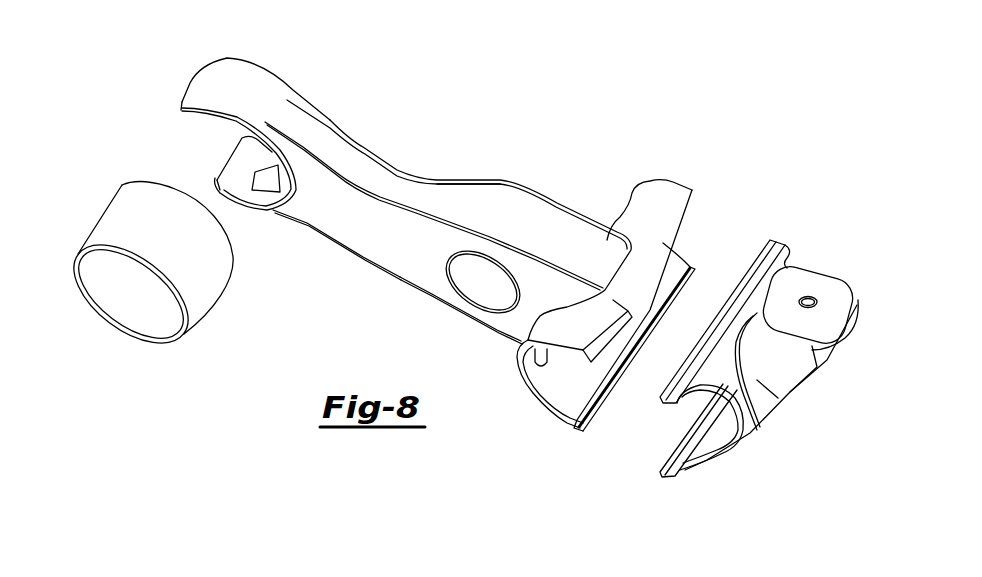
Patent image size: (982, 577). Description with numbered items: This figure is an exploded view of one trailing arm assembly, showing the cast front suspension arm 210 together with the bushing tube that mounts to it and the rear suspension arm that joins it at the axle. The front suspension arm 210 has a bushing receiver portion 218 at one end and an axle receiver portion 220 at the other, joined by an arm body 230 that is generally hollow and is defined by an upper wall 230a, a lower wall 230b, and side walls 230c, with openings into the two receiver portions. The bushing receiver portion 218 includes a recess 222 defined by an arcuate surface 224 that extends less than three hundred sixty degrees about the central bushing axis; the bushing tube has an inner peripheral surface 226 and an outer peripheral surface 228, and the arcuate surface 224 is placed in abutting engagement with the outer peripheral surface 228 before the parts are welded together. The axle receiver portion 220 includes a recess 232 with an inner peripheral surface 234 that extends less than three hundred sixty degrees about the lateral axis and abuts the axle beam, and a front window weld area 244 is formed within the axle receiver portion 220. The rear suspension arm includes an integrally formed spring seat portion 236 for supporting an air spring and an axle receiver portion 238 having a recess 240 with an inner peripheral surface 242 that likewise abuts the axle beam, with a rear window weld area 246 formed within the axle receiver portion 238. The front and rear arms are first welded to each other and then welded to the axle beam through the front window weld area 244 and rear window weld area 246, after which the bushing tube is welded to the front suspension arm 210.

The front suspension arm 210 is at (355, 160).
The bushing receiver portion 218 is at (205, 81).
The axle receiver portion 220 is at (660, 188).
The recess 222 is at (208, 133).
The arcuate surface 224 is at (235, 183).
The inner peripheral surface 226 is at (160, 310).
The outer peripheral surface 228 is at (121, 220).
The arm body 230 is at (530, 204).
The upper wall 230a is at (465, 194).
The lower wall 230b is at (387, 271).
The side walls 230c is at (330, 213).
The recess 232 is at (694, 237).
The inner peripheral surface 234 is at (557, 393).
The spring seat portion 236 is at (825, 283).
The axle receiver portion 238 is at (721, 457).
The recess 240 is at (675, 421).
The inner peripheral surface 242 is at (720, 440).
The front window weld area 244 is at (505, 342).
The rear window weld area 246 is at (816, 397).